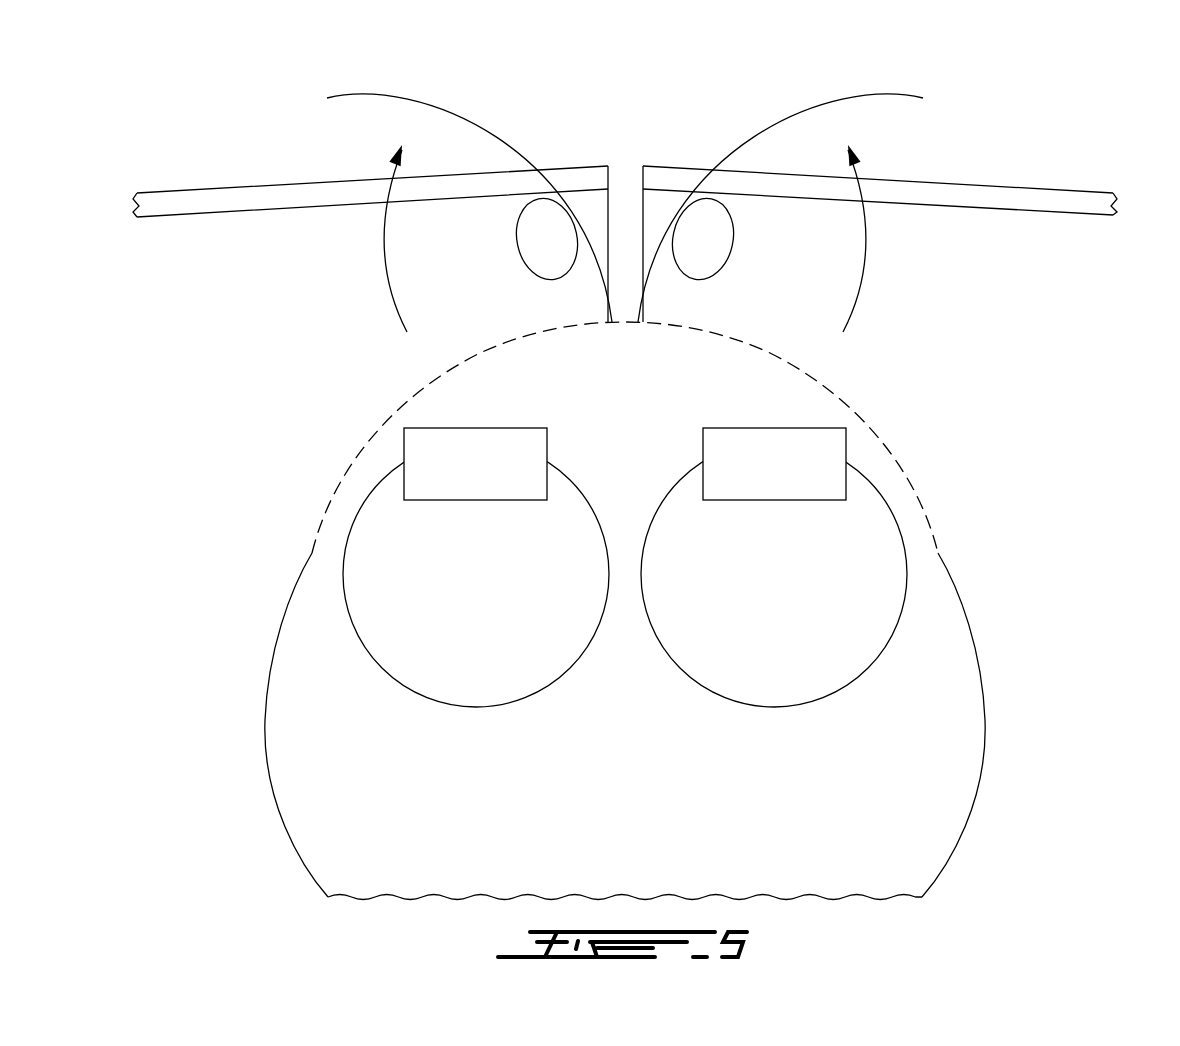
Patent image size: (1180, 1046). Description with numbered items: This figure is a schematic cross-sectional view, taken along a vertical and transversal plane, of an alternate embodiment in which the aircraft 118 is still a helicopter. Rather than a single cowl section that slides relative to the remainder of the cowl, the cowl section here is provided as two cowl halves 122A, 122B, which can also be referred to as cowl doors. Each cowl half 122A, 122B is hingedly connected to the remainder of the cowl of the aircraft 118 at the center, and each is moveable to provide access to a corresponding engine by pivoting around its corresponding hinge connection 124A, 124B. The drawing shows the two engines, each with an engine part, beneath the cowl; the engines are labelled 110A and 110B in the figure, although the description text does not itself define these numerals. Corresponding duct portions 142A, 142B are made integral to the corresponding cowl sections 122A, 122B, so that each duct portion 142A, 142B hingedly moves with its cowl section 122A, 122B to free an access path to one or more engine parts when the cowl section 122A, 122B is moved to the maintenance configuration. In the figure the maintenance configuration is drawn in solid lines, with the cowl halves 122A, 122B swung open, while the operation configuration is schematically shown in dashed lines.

The first engine nacelle 110A is at (367, 495).
The second engine nacelle 110B is at (875, 520).
The aircraft 118 is at (1041, 156).
The cowl half 122A is at (500, 138).
The cowl half 122B is at (750, 138).
The hinge connection 124A is at (607, 312).
The hinge connection 124B is at (643, 312).
The duct portion 142A is at (550, 222).
The duct portion 142B is at (700, 222).